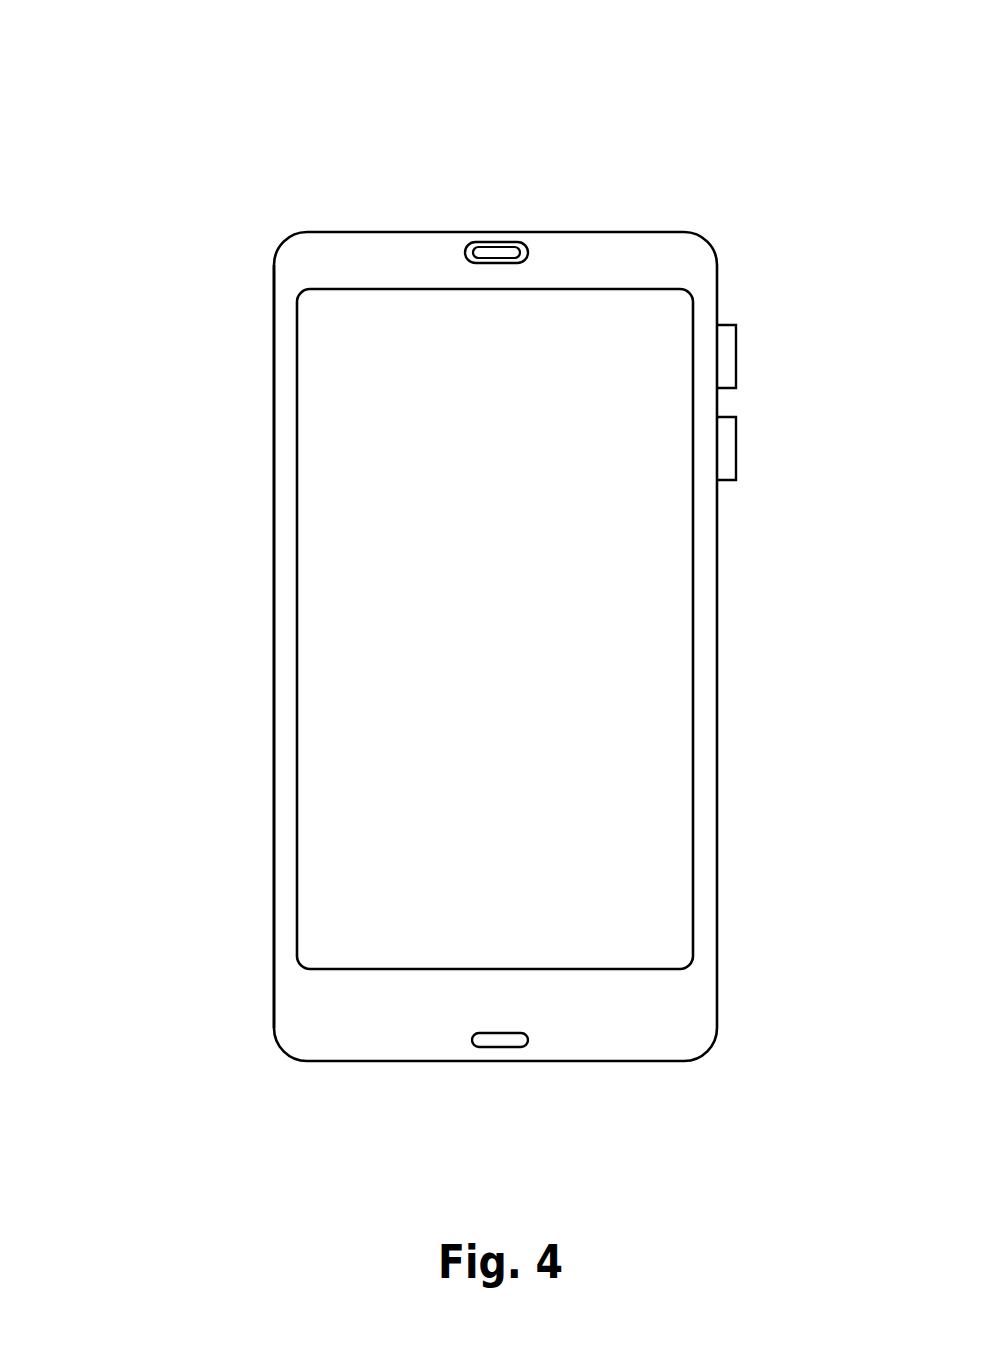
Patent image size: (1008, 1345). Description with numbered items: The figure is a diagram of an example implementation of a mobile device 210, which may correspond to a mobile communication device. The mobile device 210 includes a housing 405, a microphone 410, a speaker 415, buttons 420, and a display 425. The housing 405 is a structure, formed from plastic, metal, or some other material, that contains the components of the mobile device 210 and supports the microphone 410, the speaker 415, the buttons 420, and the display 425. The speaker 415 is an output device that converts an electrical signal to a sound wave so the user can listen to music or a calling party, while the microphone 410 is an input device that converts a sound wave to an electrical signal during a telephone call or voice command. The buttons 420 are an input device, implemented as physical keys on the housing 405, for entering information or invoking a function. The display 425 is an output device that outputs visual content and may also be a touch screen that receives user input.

The mobile device 210 is at (226, 86).
The housing 405 is at (275, 563).
The microphone 410 is at (504, 1049).
The speaker 415 is at (497, 242).
The buttons 420 is at (735, 452).
The display 425 is at (640, 500).